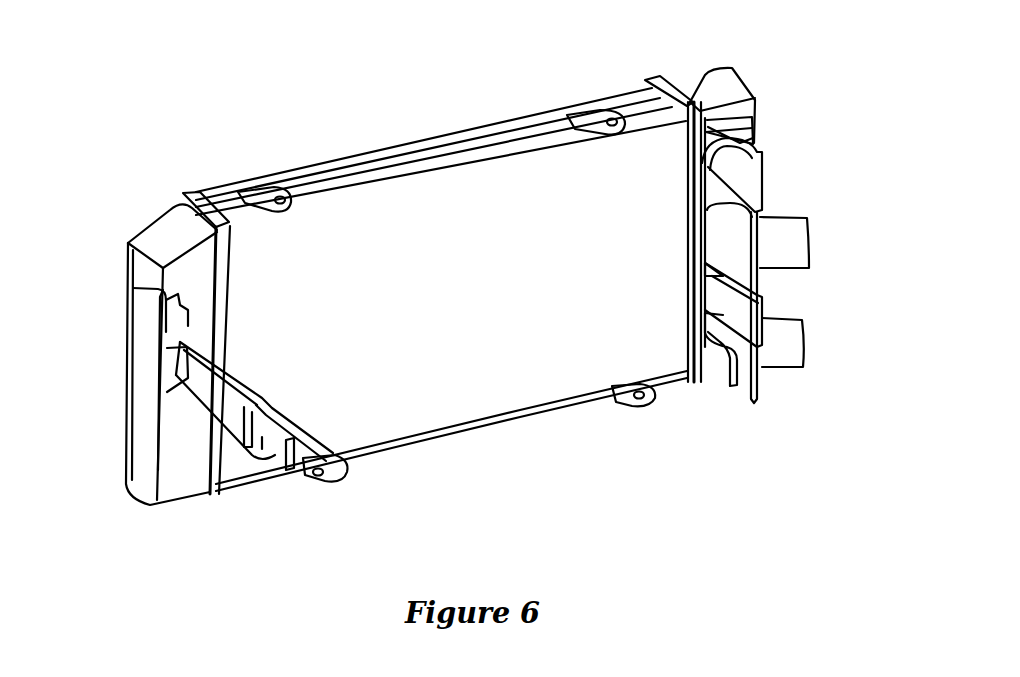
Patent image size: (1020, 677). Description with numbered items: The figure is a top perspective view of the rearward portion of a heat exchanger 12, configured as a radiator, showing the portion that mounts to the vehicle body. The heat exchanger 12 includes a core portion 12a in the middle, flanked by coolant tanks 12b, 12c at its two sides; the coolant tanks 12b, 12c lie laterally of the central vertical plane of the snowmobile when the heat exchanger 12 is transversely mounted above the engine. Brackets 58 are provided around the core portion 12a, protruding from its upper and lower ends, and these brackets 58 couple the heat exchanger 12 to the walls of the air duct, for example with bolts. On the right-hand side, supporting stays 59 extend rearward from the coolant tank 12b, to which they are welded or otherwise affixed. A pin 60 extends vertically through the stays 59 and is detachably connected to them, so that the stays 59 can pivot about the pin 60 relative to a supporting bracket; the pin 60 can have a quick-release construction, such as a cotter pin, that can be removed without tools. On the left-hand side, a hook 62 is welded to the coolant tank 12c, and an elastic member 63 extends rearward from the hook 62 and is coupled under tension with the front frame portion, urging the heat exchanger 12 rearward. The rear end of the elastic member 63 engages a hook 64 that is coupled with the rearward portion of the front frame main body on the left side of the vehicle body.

The heat exchanger 12 is at (580, 405).
The core portion 12a is at (492, 378).
The coolant tank 12b is at (722, 82).
The coolant tank 12c is at (175, 238).
The brackets 58 is at (290, 204).
The supporting stays 59 is at (747, 183).
The pin 60 is at (760, 385).
The hook 62 is at (182, 370).
The elastic member 63 is at (205, 407).
The hook 64 is at (270, 462).